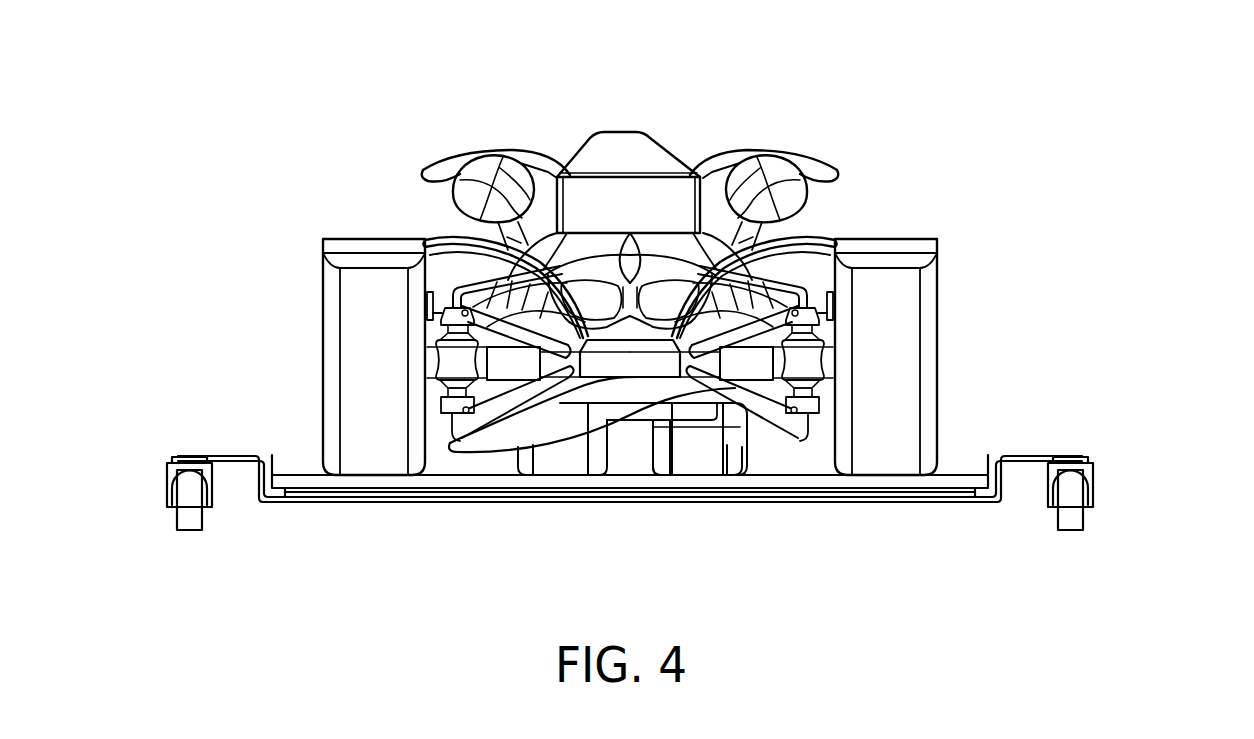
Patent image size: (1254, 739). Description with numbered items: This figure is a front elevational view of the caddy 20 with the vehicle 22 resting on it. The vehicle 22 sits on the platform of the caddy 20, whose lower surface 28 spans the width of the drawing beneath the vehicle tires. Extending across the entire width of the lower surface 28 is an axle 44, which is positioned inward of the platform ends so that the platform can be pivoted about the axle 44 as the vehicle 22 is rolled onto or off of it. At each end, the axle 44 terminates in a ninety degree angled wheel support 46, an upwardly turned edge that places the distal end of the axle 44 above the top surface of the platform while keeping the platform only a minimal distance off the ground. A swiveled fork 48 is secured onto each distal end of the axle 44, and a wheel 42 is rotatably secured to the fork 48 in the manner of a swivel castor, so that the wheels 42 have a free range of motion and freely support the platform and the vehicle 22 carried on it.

The caddy 20 is at (1080, 177).
The vehicle 22 is at (818, 172).
The lower surface 28 is at (933, 503).
The wheel 42 is at (188, 530).
The axle 44 is at (475, 502).
The angled wheel support 46 is at (193, 433).
The swiveled fork 48 is at (167, 488).